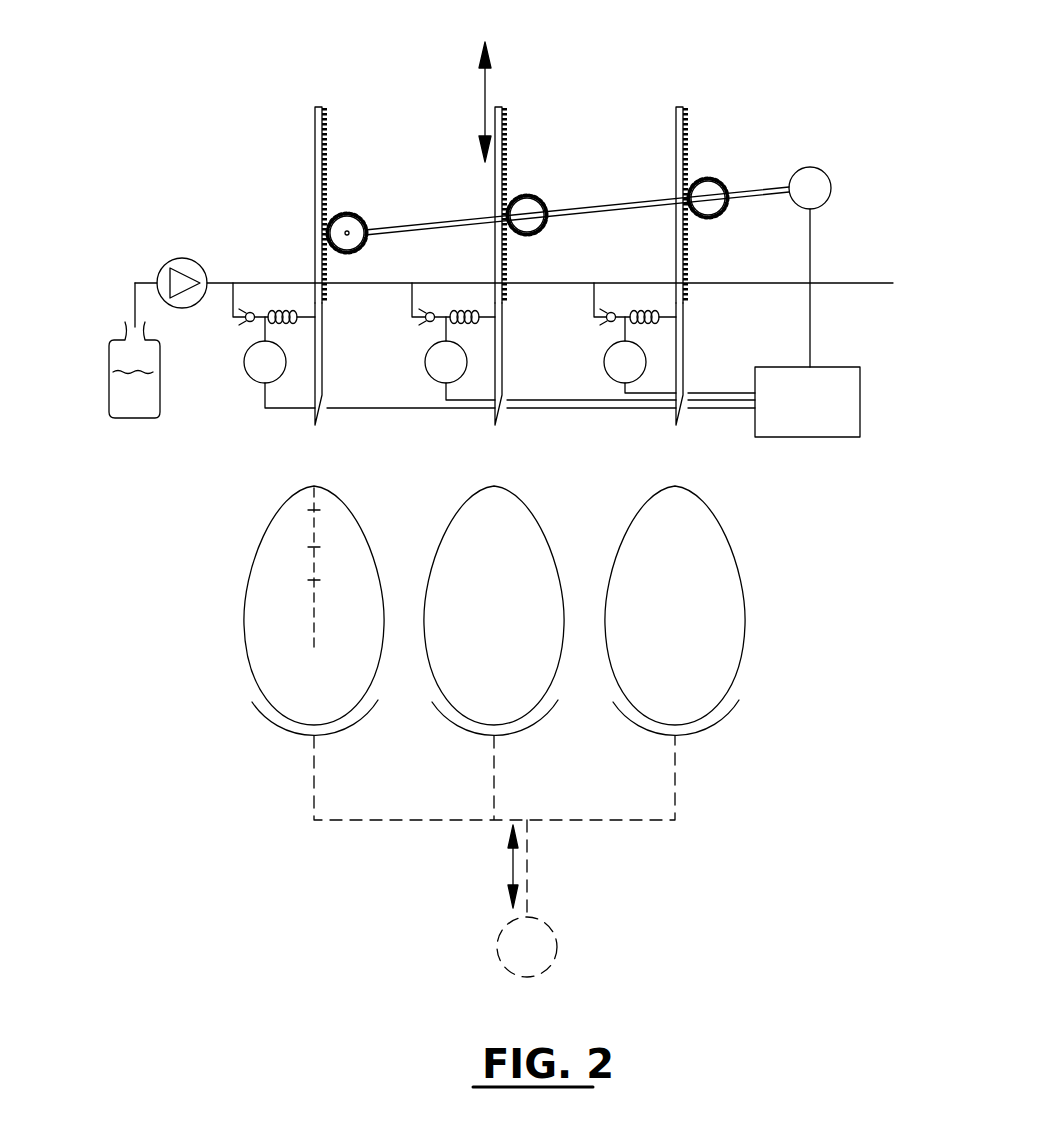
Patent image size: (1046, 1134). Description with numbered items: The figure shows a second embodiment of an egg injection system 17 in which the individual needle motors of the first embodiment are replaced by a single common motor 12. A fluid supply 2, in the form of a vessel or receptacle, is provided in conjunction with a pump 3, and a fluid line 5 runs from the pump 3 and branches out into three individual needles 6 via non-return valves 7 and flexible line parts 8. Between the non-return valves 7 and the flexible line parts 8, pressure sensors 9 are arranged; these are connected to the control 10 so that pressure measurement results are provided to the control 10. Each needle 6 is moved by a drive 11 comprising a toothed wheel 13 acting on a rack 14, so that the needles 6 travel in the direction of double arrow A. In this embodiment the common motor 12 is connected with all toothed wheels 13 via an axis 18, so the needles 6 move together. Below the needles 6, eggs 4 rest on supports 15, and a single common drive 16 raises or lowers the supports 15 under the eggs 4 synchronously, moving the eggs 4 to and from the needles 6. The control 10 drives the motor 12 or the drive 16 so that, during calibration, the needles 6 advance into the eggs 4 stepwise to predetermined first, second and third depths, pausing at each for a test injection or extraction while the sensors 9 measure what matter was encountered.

The fluid supply 2 is at (140, 408).
The pump 3 is at (186, 257).
The eggs 4 is at (250, 618).
The fluid line 5 is at (233, 280).
The needles 6 is at (315, 373).
The non-return valves 7 is at (247, 323).
The flexible line parts 8 is at (284, 309).
The pressure sensors 9 is at (258, 368).
The control 10 is at (855, 400).
The drive 11 is at (552, 122).
The common motor 12 is at (583, 125).
The toothed wheels 13 is at (350, 255).
The rack 14 is at (315, 198).
The supports 15 is at (262, 710).
The common drive 16 is at (590, 943).
The system 17 is at (201, 146).
The axis 18 is at (418, 224).